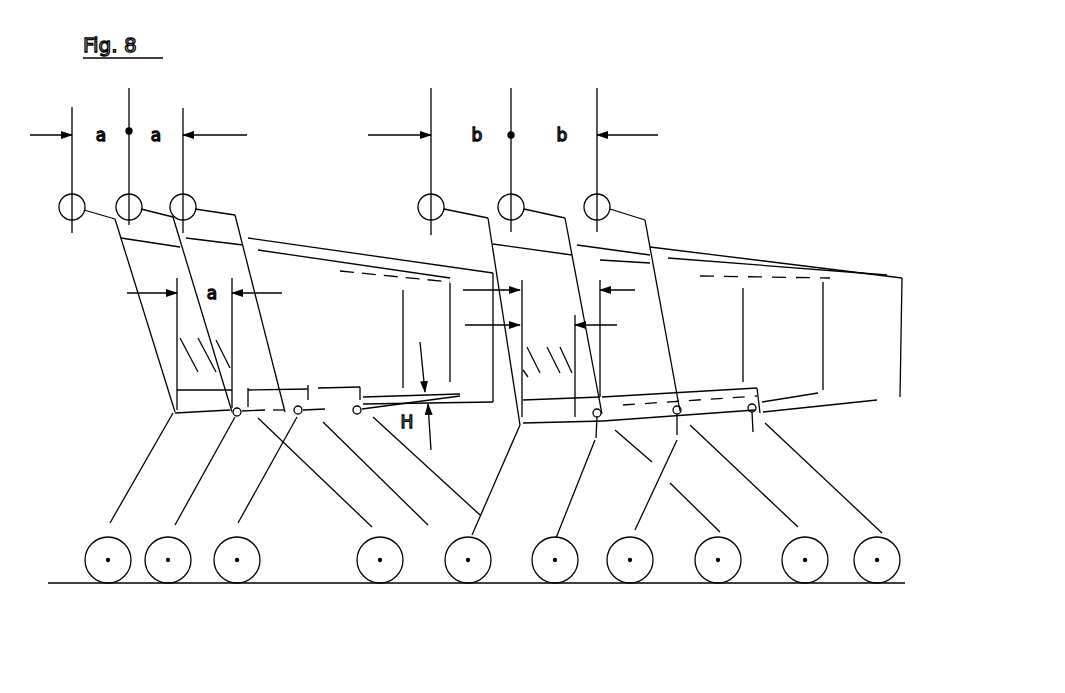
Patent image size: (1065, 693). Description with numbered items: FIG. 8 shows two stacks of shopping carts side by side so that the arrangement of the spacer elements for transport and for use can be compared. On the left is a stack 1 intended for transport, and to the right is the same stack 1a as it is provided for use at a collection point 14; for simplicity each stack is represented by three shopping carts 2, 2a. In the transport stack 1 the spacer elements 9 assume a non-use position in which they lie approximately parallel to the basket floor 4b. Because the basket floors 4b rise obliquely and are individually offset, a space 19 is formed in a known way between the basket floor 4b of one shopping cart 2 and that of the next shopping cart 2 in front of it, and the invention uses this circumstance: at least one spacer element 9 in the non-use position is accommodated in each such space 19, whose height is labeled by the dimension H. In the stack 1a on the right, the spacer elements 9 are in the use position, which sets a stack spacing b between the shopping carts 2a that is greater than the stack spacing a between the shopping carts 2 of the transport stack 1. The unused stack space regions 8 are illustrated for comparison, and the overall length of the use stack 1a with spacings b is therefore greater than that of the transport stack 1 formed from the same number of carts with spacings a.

The stack 1 is at (295, 547).
The stack 1a is at (608, 510).
The shopping carts 2 is at (167, 593).
The shopping carts 2a is at (743, 598).
The basket floor 4b is at (318, 378).
The unused stack space regions 8 is at (200, 353).
The spacer element 9 is at (300, 420).
The collection point 14 is at (810, 197).
The space 19 is at (452, 405).